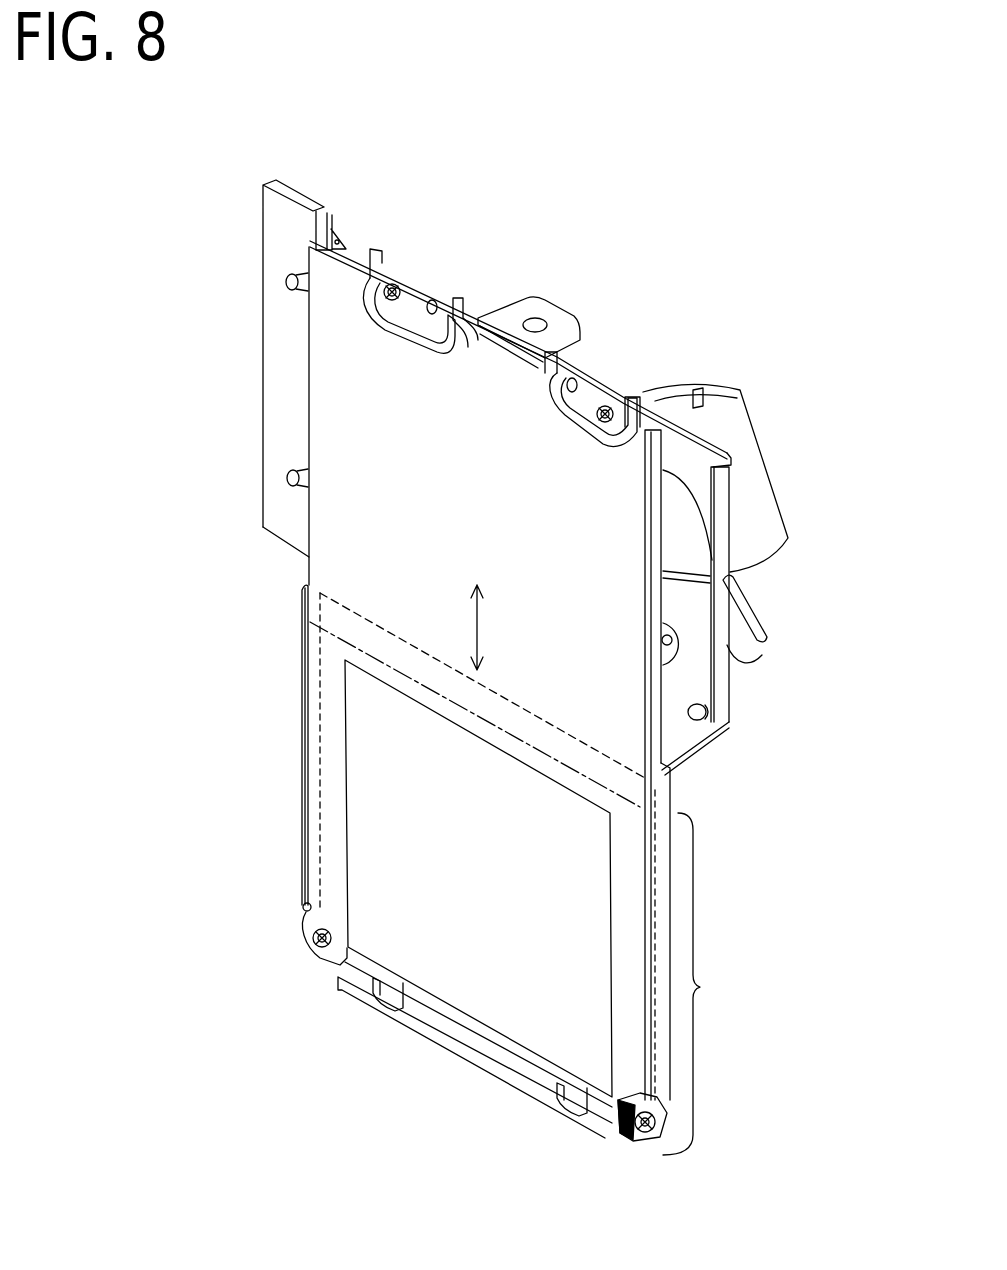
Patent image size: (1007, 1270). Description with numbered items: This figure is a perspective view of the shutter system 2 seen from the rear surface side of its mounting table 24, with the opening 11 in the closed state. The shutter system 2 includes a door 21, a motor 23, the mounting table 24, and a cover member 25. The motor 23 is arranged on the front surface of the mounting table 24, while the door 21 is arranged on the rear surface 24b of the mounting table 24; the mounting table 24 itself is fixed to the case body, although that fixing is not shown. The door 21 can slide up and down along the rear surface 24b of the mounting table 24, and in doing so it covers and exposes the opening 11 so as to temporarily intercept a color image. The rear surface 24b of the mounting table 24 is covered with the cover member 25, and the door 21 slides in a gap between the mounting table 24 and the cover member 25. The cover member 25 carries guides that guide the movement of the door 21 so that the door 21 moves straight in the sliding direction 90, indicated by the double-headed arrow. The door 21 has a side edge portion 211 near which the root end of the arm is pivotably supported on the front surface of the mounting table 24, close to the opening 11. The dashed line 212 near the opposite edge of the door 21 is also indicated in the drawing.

The shutter system 2 is at (632, 362).
The motor 23 is at (742, 447).
The mounting table 24 is at (722, 615).
The rear surface 24b is at (693, 658).
The cover member 25 is at (372, 552).
The sliding direction 90 is at (479, 632).
The guide groove 212 is at (328, 743).
The door 21 is at (535, 808).
The side edge portion 211 is at (637, 902).
The opening 11 is at (698, 984).